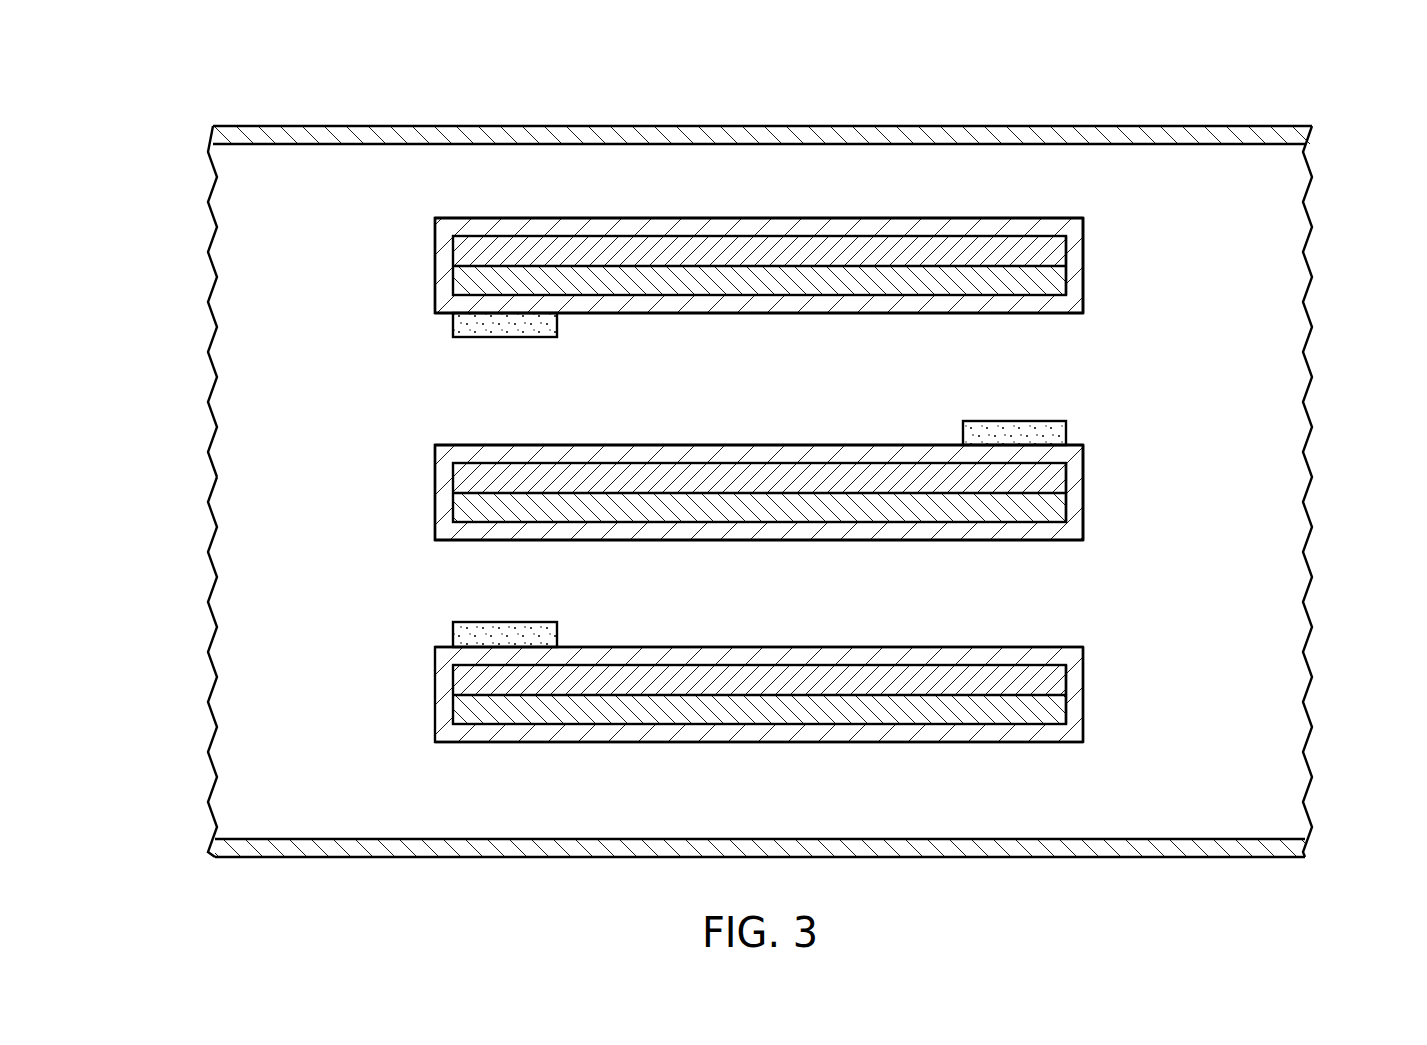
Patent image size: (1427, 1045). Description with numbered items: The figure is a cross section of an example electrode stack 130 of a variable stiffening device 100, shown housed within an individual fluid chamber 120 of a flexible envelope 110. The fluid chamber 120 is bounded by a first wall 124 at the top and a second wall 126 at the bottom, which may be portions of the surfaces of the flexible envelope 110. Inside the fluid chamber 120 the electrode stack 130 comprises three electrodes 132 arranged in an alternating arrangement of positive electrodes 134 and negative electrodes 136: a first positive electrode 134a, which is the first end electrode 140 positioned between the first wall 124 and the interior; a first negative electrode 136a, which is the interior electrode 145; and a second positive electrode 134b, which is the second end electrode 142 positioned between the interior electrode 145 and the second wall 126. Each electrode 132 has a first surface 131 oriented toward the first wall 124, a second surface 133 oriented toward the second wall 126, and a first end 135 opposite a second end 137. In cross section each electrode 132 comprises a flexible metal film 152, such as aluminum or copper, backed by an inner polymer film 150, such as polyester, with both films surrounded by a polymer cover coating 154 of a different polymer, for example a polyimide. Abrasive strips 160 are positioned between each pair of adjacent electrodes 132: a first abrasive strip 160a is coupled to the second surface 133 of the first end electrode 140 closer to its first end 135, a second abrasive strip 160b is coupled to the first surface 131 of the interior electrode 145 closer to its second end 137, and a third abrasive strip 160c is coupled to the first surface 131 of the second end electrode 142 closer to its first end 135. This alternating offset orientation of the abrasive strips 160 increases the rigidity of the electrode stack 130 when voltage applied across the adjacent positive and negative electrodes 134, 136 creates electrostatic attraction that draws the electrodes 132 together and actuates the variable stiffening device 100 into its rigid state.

The variable stiffening device 100 is at (766, 473).
The flexible envelope 110 is at (761, 87).
The fluid chamber 120 is at (1334, 491).
The first wall 124 is at (761, 125).
The second wall 126 is at (488, 857).
The electrode stack 130 is at (170, 667).
The electrode 132 is at (185, 301).
The first surface 131 is at (805, 218).
The second surface 133 is at (768, 313).
The positive electrode 134 is at (814, 235).
The first positive electrode 134a is at (1148, 242).
The second positive electrode 134b is at (1149, 670).
The first end 135 is at (435, 265).
The negative electrode 136 is at (814, 461).
The first negative electrode 136a is at (1147, 468).
The second end 137 is at (1083, 302).
The first end electrode 140 is at (1142, 291).
The second end electrode 142 is at (1142, 721).
The interior electrode 145 is at (1142, 518).
The inner polymer film 150 is at (655, 247).
The flexible metal film 152 is at (862, 288).
The polymer cover coating 154 is at (653, 302).
The abrasive strip 160 is at (439, 356).
The first abrasive strip 160a is at (508, 338).
The second abrasive strip 160b is at (1012, 421).
The third abrasive strip 160c is at (510, 622).